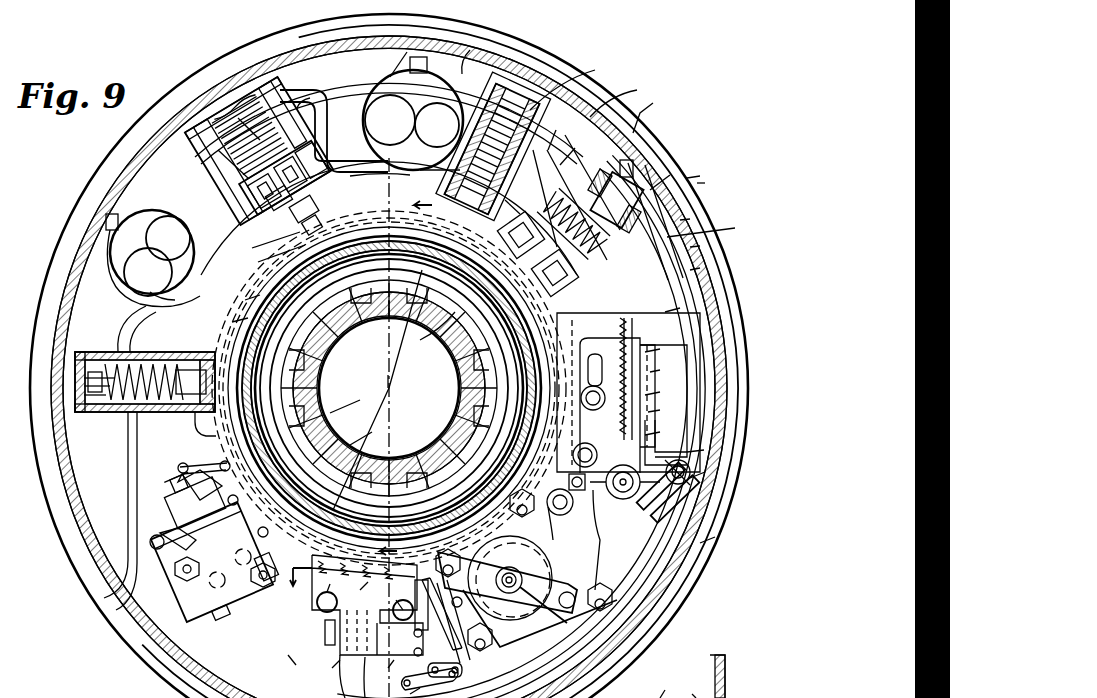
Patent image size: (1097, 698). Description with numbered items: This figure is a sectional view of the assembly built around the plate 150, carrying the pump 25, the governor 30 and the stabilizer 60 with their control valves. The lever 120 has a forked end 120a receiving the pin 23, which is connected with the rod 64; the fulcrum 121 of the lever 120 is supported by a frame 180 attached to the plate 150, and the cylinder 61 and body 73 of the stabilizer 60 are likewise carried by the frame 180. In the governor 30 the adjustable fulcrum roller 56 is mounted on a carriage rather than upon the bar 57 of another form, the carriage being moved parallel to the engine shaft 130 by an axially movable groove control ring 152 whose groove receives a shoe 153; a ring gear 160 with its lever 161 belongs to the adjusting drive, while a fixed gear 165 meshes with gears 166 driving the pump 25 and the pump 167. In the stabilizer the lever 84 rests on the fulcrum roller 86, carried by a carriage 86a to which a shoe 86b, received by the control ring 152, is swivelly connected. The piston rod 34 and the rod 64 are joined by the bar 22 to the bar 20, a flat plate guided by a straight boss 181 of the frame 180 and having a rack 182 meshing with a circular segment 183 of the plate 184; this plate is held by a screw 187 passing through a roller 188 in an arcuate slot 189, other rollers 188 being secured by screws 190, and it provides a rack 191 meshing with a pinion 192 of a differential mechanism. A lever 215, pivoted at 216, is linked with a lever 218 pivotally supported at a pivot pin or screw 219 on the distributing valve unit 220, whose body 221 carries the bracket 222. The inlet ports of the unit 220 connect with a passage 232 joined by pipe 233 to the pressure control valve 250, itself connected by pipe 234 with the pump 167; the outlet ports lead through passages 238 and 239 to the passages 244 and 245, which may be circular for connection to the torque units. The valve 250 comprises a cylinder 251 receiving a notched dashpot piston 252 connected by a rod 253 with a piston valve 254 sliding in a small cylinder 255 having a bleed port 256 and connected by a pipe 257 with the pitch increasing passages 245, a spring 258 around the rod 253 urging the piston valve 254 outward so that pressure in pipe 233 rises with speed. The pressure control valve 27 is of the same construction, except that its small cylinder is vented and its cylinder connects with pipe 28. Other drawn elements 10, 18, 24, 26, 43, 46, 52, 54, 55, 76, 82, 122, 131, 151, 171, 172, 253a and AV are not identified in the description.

The housing 10 is at (419, 378).
The pawl 18 is at (310, 605).
The bar 20 is at (645, 395).
The bar 22 is at (666, 442).
The pin 23 is at (690, 486).
The pivot 24 is at (619, 494).
The pump 25 is at (388, 72).
The conduit 26 is at (326, 120).
The pressure control valve 27 is at (518, 116).
The pipe 28 is at (456, 122).
The governor 30 is at (235, 148).
The piston rod 34 is at (642, 517).
The valve body 43 is at (240, 176).
The ring 46 is at (541, 135).
The spring 52 is at (252, 148).
The plunger 54 is at (266, 196).
The pin 55 is at (519, 199).
The adjustable fulcrum roller 56 is at (290, 208).
The bar 57 is at (302, 226).
The stabilizer 60 is at (658, 91).
The cylinder 61 is at (665, 312).
The rod 64 is at (690, 470).
The body 73 is at (648, 114).
The ring 76 is at (690, 247).
The piston 82 is at (602, 188).
The lever 84 is at (528, 230).
The stabilizer fulcrum roller 86 is at (600, 248).
The carriage 86a is at (389, 388).
The shoe 86b is at (433, 335).
The lever 120 is at (687, 178).
The forked end 120a is at (690, 478).
The fulcrum 121 is at (690, 270).
The rim 122 is at (670, 175).
The engine shaft 130 is at (389, 388).
The shaft 131 is at (389, 314).
The plate 150 is at (697, 183).
The casing wall 151 is at (680, 220).
The groove control ring 152 is at (276, 262).
The shoe 153 is at (270, 250).
The ring gear 160 is at (244, 322).
The lever 161 is at (722, 666).
The fixed gear 165 is at (380, 181).
The gears 166 is at (350, 100).
The pump 167 is at (110, 240).
The support 171 is at (654, 691).
The pin 172 is at (688, 688).
The frame 180 is at (700, 543).
The straight boss 181 is at (645, 352).
The rack 182 is at (650, 372).
The circular segment 183 is at (648, 412).
The plate 184 is at (612, 325).
The screw 187 is at (582, 532).
The roller 188 is at (592, 429).
The arcuate slot 189 is at (592, 352).
The screws 190 is at (600, 416).
The rack 191 is at (560, 582).
The pinion 192 is at (500, 600).
The lever 215 is at (460, 660).
The pivot 216 is at (490, 575).
The lever 218 is at (402, 691).
The pivot pin or screw 219 is at (404, 682).
The distributing valve unit 220 is at (311, 648).
The body 221 is at (324, 667).
The bracket 222 is at (379, 667).
The passage 232 is at (353, 592).
The pipe 233 is at (279, 660).
The pipe 234 is at (158, 300).
The passage 238 is at (388, 601).
The passage 239 is at (324, 584).
The passage 244 is at (360, 435).
The passage 245 is at (345, 408).
The pressure control valve 250 is at (112, 448).
The cylinder 251 is at (84, 378).
The notched dashpot piston 252 is at (84, 386).
The rod 253 is at (84, 395).
The spring end 253a is at (256, 300).
The piston valve 254 is at (193, 416).
The small cylinder 255 is at (200, 436).
The bleed port 256 is at (433, 180).
The pipe 257 is at (178, 482).
The spring 258 is at (116, 345).
The valve block AV is at (153, 567).